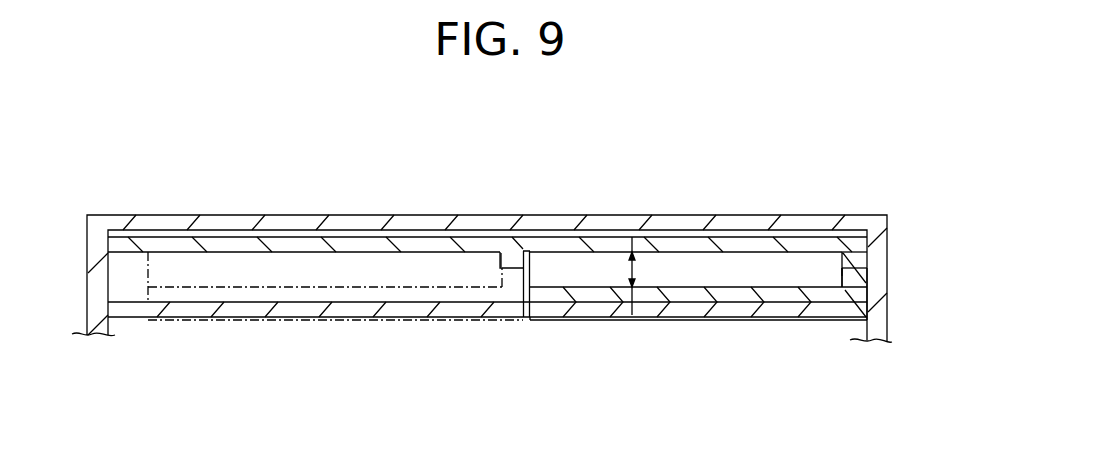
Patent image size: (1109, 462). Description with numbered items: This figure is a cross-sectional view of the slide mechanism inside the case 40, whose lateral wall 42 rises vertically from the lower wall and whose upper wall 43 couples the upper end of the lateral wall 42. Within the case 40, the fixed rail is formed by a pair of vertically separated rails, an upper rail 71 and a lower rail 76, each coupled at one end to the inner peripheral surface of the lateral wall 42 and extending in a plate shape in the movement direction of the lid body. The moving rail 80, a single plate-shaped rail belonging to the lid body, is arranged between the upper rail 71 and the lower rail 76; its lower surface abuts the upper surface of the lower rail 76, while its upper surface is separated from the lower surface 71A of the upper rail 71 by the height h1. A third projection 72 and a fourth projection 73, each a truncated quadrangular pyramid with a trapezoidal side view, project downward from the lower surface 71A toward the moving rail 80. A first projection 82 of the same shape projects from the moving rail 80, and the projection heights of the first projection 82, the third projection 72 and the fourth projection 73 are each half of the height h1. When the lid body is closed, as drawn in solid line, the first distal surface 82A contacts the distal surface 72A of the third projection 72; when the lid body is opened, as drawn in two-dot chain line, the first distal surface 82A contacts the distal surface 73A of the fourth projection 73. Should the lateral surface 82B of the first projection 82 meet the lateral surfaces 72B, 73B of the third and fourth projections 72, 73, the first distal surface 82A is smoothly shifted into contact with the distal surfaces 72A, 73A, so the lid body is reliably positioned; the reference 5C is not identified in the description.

The case 40 is at (219, 191).
The lateral wall 42 is at (87, 243).
The upper wall 43 is at (163, 215).
The upper rail 71 is at (598, 246).
The lower surface of the upper rail 71A is at (692, 256).
The third projection 72 is at (853, 262).
The distal surface of the third projection 72A is at (855, 270).
The lateral surface of the third projection 72B is at (838, 257).
The fourth projection 73 is at (498, 254).
The distal surface of the fourth projection 73A is at (499, 278).
The lateral surface of the fourth projection 73B is at (525, 251).
The lower rail 76 is at (343, 307).
The moving rail 80 is at (590, 300).
The bottom surface 5C is at (550, 322).
The first projection 82 is at (850, 280).
The first distal surface 82A is at (842, 267).
The lateral surface of the first projection 82B is at (869, 272).
The height h1 is at (640, 268).